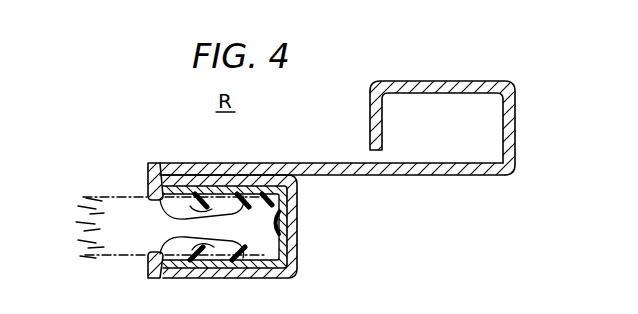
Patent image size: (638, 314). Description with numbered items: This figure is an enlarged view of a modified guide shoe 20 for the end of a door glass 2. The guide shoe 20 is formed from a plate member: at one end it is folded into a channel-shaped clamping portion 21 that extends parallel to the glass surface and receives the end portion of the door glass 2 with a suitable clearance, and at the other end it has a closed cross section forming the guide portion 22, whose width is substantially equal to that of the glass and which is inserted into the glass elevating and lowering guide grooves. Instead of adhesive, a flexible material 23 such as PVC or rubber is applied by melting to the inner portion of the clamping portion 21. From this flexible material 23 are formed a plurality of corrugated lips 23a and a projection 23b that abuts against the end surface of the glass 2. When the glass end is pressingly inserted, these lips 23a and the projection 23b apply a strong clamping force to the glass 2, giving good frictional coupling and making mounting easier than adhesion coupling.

The door glass 2 is at (105, 250).
The guide shoe 20 is at (334, 163).
The clamping portion 21 is at (245, 279).
The guide portion 22 is at (437, 80).
The flexible material 23 is at (254, 182).
The corrugated lips 23a is at (186, 207).
The projection 23b is at (297, 234).